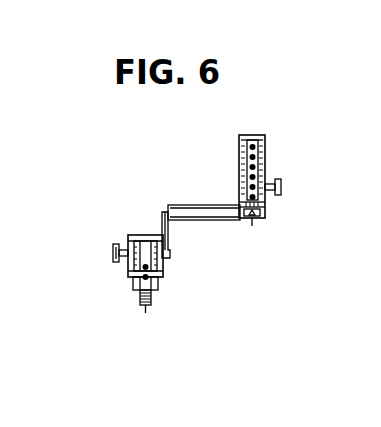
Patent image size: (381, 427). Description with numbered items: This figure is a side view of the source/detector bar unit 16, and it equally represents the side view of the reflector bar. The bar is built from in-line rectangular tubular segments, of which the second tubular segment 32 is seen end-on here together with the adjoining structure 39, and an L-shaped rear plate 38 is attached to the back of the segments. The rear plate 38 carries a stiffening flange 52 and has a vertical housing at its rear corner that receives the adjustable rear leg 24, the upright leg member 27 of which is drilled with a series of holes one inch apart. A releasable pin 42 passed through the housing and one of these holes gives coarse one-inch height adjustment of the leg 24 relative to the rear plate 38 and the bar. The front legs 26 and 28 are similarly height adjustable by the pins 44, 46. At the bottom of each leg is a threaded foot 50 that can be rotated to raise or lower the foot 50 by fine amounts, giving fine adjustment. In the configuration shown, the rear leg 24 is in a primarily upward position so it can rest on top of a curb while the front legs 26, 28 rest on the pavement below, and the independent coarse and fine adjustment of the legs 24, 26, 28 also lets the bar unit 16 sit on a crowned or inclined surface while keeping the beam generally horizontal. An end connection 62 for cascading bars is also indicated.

The S/D bar unit 16 is at (208, 262).
The vertical support bar 27 is at (266, 141).
The releasable pin 42 is at (283, 191).
The stiffening flange 52 is at (205, 205).
The L-shaped rear plate 38 is at (164, 210).
The clamp housing 39 is at (109, 224).
The second rectangular tubular segment 32 is at (138, 232).
The pin 44 is at (82, 233).
The pin 46 is at (112, 248).
The adjustable leg 24 is at (88, 330).
The leg 26 is at (88, 330).
The leg 28 is at (118, 292).
The threaded foot 50 is at (147, 296).
The end connection 62 is at (0, 257).